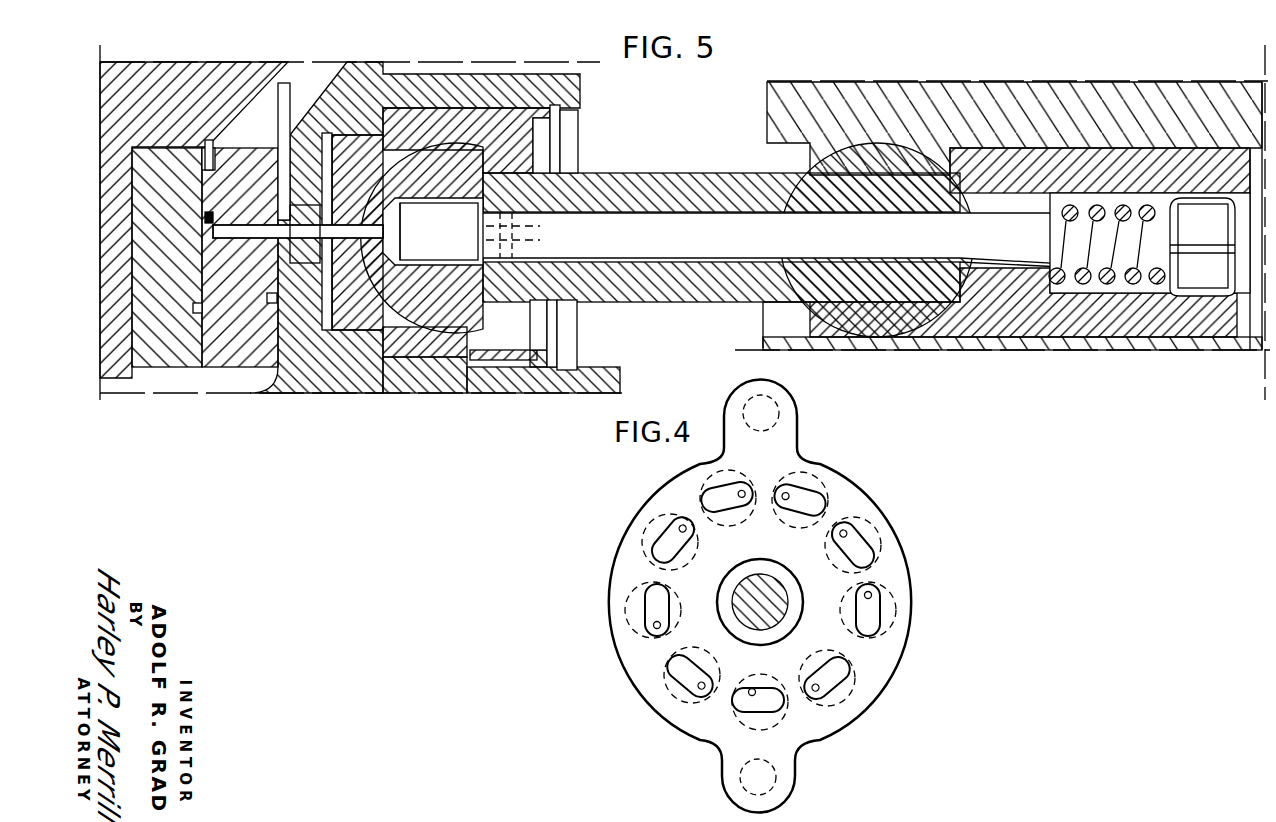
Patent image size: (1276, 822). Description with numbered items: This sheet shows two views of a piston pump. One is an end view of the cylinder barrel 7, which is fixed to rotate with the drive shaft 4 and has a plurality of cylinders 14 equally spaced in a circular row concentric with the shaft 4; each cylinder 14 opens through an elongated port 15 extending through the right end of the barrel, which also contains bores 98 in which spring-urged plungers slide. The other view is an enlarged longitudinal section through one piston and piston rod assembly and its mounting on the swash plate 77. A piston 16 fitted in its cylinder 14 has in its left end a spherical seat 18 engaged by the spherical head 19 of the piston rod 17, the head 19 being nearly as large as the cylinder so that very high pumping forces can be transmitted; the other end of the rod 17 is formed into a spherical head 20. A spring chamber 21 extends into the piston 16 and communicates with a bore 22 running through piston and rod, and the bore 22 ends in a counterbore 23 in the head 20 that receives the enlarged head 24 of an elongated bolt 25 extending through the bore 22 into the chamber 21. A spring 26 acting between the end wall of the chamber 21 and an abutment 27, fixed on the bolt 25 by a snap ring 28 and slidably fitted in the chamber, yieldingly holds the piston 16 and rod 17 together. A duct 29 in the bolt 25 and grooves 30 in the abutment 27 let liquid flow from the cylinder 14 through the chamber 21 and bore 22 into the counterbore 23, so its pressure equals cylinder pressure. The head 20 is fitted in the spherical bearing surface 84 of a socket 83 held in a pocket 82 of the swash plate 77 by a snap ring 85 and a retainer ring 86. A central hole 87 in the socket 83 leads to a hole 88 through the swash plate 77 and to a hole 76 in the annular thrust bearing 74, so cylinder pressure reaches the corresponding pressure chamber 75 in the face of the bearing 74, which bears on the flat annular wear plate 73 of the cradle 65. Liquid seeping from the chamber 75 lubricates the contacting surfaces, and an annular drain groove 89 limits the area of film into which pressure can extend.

In FIG. 4, the drive shaft 4 is at (760, 602).
In FIG. 5, the cylinder barrel 7 is at (1140, 345).
In FIG. 4, the cylinder barrel 7 is at (622, 565).
In FIG. 5, the cylinders 14 is at (775, 330).
In FIG. 4, the cylinders 14 is at (665, 515).
In FIG. 4, the elongated port 15 is at (740, 500).
In FIG. 5, the piston 16 is at (1030, 322).
In FIG. 5, the piston rod 17 is at (743, 173).
In FIG. 5, the spherical seat 18 is at (893, 330).
In FIG. 5, the spherical head 19 is at (838, 150).
In FIG. 5, the spherical head 20 is at (520, 305).
In FIG. 5, the spring chamber 21 is at (1240, 345).
In FIG. 5, the bore 22 is at (935, 262).
In FIG. 5, the counterbore 23 is at (398, 250).
In FIG. 5, the enlarged head 24 is at (446, 226).
In FIG. 5, the elongated bolt 25 is at (742, 245).
In FIG. 5, the spring 26 is at (1130, 222).
In FIG. 5, the abutment 27 is at (1212, 276).
In FIG. 5, the snap ring 28 is at (1243, 210).
In FIG. 5, the duct 29 is at (515, 238).
In FIG. 5, the grooves 30 is at (1200, 244).
In FIG. 5, the cradle 65 is at (112, 370).
In FIG. 5, the wear plate 73 is at (160, 368).
In FIG. 5, the thrust bearing 74 is at (222, 368).
In FIG. 5, the pressure chambers 75 is at (205, 212).
In FIG. 5, the hole 76 is at (264, 231).
In FIG. 5, the swash plate 77 is at (338, 382).
In FIG. 5, the pockets 82 is at (560, 357).
In FIG. 5, the socket 83 is at (408, 360).
In FIG. 5, the spherical bearing surface 84 is at (465, 360).
In FIG. 5, the snap ring 85 is at (560, 140).
In FIG. 5, the retainer ring 86 is at (534, 370).
In FIG. 5, the central hole 87 is at (360, 236).
In FIG. 5, the hole 88 is at (290, 236).
In FIG. 5, the annular drain groove 89 is at (193, 310).
In FIG. 4, the bores 98 is at (785, 410).